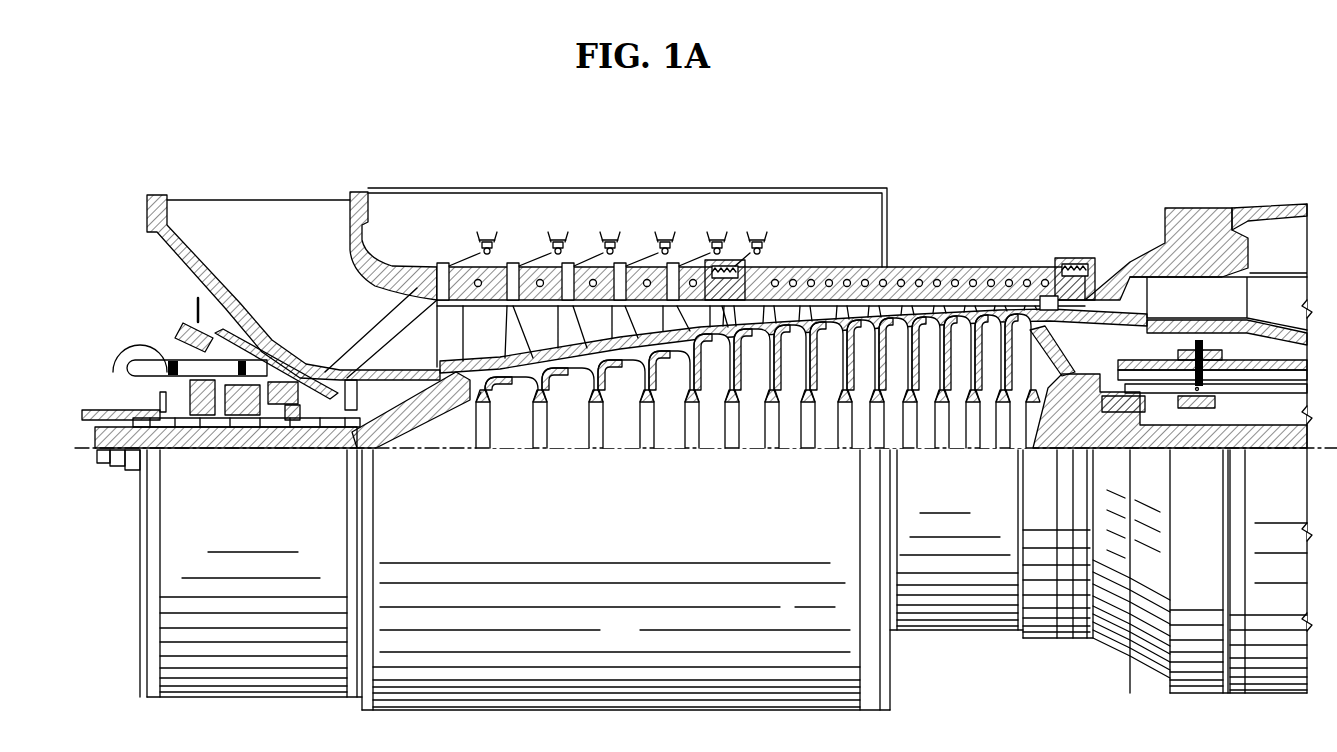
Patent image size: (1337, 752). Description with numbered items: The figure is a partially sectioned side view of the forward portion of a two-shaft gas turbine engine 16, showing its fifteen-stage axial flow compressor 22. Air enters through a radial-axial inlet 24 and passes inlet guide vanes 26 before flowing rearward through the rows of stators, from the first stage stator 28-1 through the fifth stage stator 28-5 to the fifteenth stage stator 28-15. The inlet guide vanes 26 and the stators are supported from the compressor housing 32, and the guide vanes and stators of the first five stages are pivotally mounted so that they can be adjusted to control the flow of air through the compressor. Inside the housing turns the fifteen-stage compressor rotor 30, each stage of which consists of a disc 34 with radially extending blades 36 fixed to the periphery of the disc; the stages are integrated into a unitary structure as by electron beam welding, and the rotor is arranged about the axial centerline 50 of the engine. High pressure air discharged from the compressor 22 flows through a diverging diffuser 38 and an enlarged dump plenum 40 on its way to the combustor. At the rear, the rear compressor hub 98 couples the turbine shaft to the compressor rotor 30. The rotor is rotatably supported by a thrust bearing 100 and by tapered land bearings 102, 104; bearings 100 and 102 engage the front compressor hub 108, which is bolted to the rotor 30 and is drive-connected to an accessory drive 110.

The gas turbine engine 16 is at (912, 80).
The axial flow compressor 22 is at (478, 176).
The radial-axial inlet 24 is at (266, 198).
The inlet guide vanes 26 is at (435, 305).
The first stage stator 28-1 is at (503, 327).
The fifth stage stator 28-5 is at (720, 312).
The fifteenth stage stator 28-15 is at (1048, 300).
The compressor rotor 30 is at (722, 452).
The compressor housing 32 is at (928, 268).
The disc 34 is at (470, 420).
The blades 36 is at (530, 268).
The diverging diffuser 38 is at (1132, 297).
The dump plenum 40 is at (1255, 238).
The axial centerline 50 is at (796, 452).
The rear compressor hub 98 is at (1170, 415).
The thrust bearing 100 is at (215, 452).
The tapered land bearing 102 is at (290, 450).
The tapered land bearing 104 is at (1113, 447).
The front compressor hub 108 is at (374, 384).
The accessory drive 110 is at (170, 340).